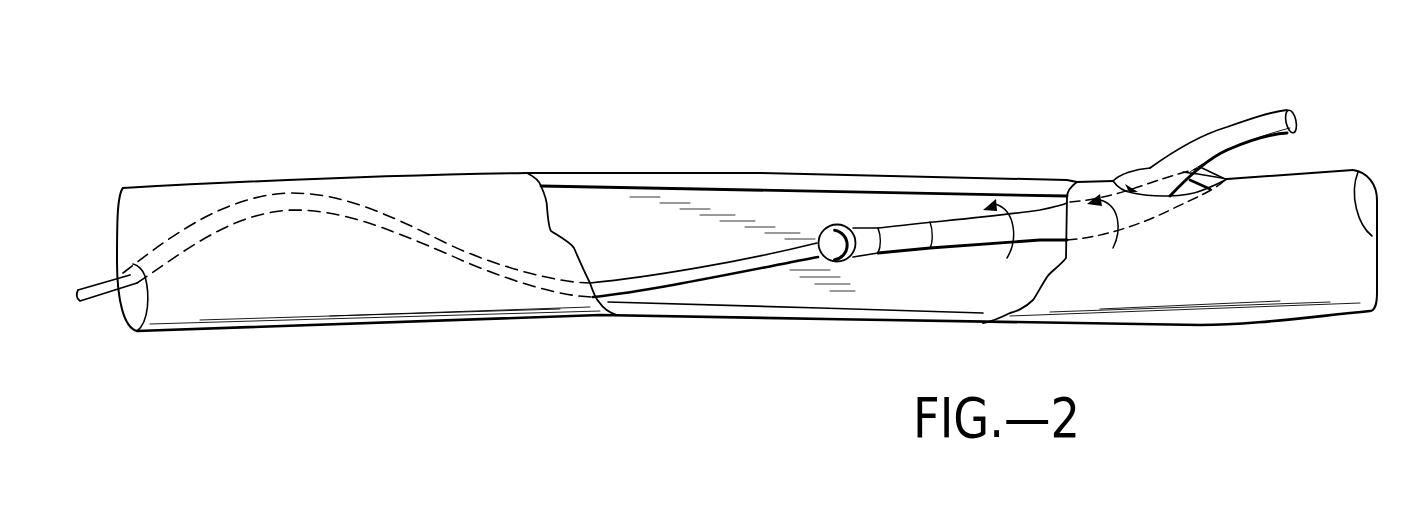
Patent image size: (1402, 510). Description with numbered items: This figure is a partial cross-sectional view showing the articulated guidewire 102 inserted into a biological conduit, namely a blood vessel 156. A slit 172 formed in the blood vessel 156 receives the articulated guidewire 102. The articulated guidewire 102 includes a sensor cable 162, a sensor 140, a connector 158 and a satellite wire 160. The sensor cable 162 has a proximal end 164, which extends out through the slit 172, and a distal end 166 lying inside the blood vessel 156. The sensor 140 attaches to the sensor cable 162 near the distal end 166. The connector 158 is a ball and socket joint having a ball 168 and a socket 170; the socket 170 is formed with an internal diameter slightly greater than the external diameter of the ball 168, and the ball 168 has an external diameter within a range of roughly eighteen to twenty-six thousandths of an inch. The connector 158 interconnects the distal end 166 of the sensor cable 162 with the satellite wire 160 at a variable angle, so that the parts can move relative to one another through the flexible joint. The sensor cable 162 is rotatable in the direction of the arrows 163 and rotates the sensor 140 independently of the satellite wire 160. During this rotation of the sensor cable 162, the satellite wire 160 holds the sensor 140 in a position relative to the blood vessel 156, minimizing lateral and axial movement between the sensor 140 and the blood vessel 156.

The articulated guidewire 102 is at (1240, 128).
The sensor 140 is at (895, 227).
The blood vessel 156 is at (1303, 260).
The connector 158 is at (852, 228).
The satellite wire 160 is at (743, 260).
The sensor cable 162 is at (1033, 235).
The arrows 163 is at (1113, 247).
The proximal end 164 is at (1297, 127).
The distal end 166 is at (853, 267).
The ball 168 is at (820, 235).
The socket 170 is at (843, 223).
The slit 172 is at (1137, 175).